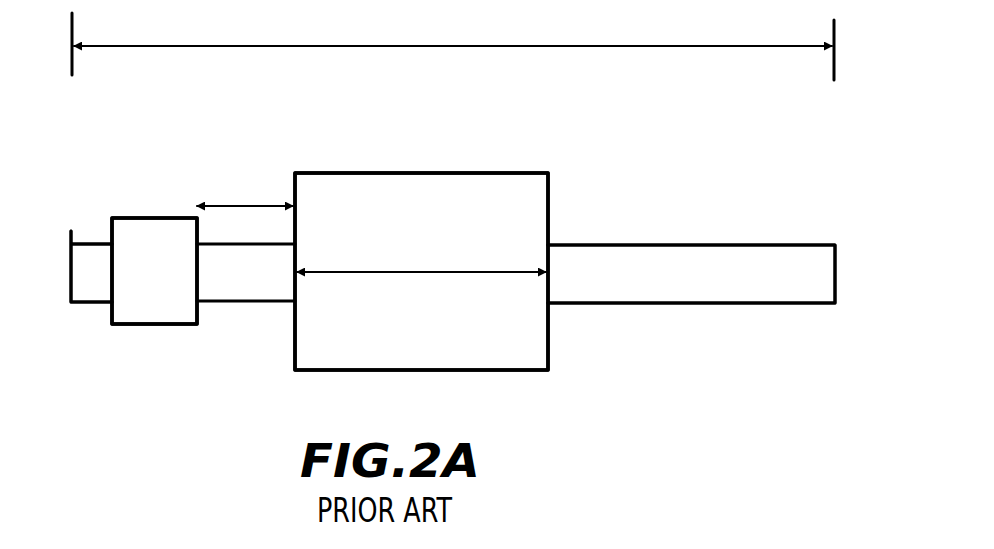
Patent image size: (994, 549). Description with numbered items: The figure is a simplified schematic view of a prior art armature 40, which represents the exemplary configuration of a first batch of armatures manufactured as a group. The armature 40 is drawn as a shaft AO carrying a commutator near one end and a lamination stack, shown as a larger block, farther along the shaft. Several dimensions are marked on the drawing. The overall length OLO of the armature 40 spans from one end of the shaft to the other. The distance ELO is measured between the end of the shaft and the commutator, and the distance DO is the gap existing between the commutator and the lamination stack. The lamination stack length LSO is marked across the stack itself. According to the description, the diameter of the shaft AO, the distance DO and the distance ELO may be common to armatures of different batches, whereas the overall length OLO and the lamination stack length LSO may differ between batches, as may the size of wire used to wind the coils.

The armature 40 is at (840, 209).
The overall length OLO is at (453, 42).
The distance between the end of the shaft and the commutator ELO is at (90, 237).
The distance between the commutator and the lamination stack DO is at (242, 203).
The lamination stack length LSO is at (421, 249).
The shaft AO is at (652, 247).